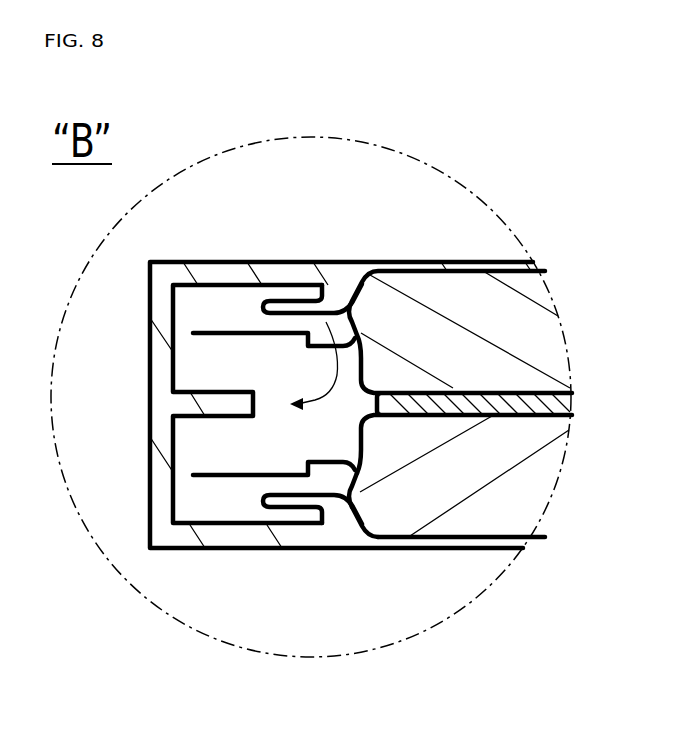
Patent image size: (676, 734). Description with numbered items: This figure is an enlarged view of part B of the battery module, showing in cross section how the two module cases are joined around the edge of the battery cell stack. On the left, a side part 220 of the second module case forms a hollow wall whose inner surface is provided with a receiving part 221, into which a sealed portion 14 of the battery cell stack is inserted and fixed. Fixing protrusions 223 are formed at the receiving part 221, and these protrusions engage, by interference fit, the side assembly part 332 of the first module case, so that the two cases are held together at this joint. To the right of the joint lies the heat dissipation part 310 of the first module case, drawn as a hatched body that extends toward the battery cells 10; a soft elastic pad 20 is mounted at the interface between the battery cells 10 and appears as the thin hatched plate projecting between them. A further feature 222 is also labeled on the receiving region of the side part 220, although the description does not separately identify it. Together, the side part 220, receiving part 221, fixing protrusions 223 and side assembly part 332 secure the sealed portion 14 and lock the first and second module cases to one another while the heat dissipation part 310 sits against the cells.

The battery cells 10 is at (537, 327).
The sealed portions 14 is at (203, 480).
The soft elastic pad 20 is at (553, 403).
The side parts 220 is at (128, 434).
The receiving parts 221 is at (322, 310).
The connecting wall 222 is at (255, 390).
The fixing protrusions 223 is at (338, 527).
The heat dissipation part 310 is at (422, 542).
The side assembly parts 332 is at (278, 506).